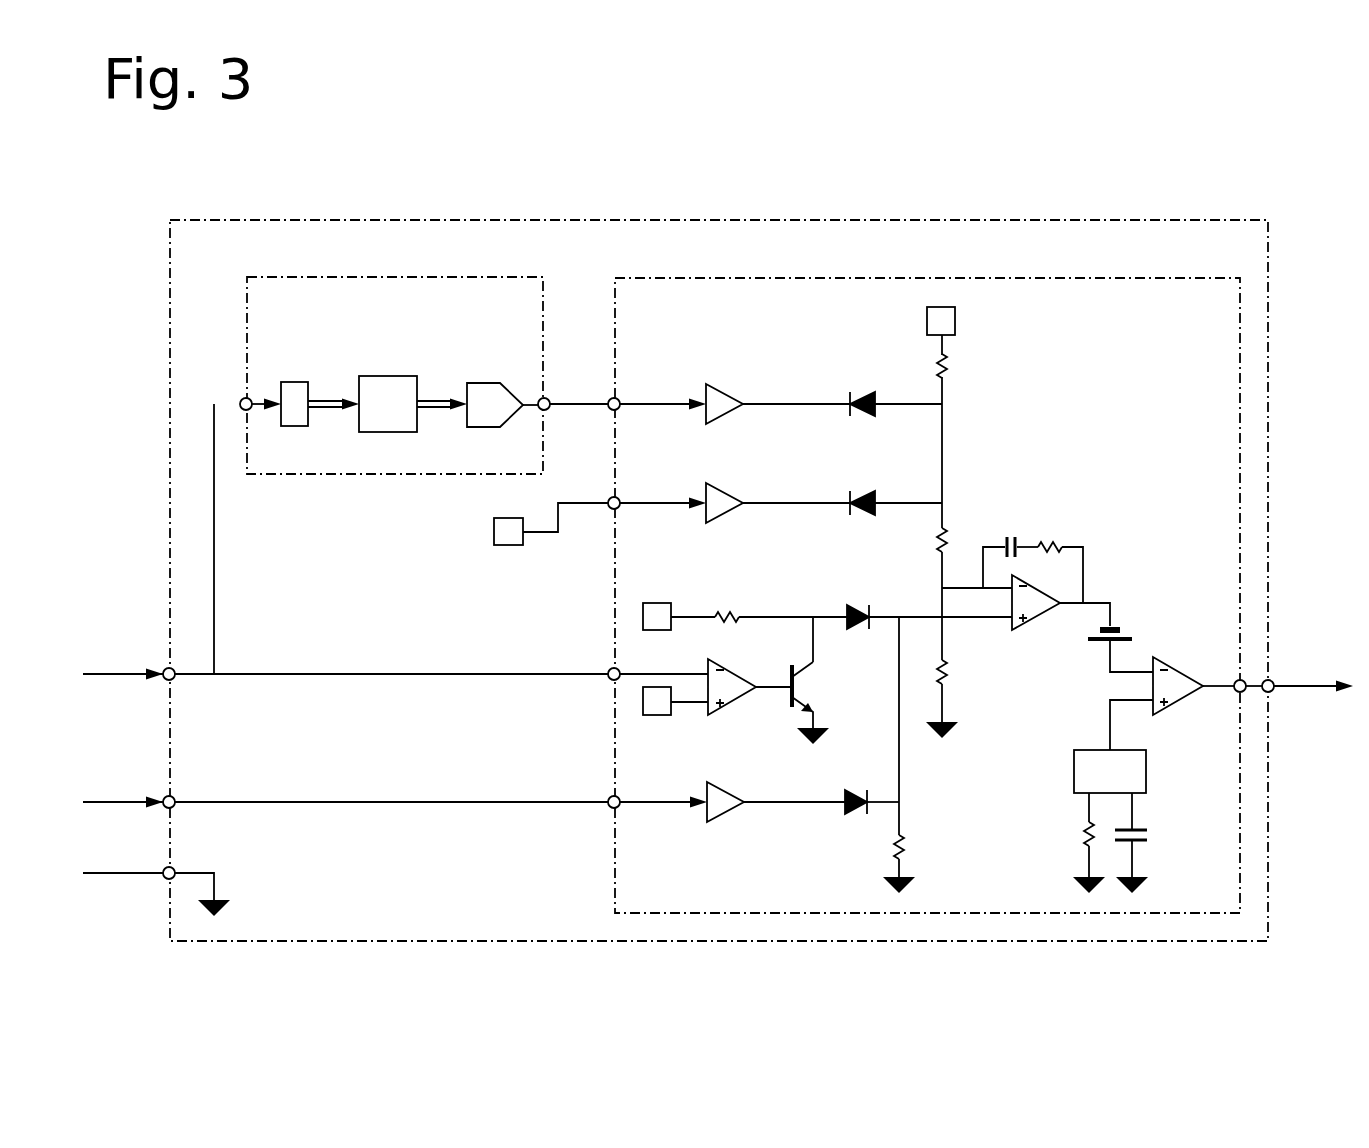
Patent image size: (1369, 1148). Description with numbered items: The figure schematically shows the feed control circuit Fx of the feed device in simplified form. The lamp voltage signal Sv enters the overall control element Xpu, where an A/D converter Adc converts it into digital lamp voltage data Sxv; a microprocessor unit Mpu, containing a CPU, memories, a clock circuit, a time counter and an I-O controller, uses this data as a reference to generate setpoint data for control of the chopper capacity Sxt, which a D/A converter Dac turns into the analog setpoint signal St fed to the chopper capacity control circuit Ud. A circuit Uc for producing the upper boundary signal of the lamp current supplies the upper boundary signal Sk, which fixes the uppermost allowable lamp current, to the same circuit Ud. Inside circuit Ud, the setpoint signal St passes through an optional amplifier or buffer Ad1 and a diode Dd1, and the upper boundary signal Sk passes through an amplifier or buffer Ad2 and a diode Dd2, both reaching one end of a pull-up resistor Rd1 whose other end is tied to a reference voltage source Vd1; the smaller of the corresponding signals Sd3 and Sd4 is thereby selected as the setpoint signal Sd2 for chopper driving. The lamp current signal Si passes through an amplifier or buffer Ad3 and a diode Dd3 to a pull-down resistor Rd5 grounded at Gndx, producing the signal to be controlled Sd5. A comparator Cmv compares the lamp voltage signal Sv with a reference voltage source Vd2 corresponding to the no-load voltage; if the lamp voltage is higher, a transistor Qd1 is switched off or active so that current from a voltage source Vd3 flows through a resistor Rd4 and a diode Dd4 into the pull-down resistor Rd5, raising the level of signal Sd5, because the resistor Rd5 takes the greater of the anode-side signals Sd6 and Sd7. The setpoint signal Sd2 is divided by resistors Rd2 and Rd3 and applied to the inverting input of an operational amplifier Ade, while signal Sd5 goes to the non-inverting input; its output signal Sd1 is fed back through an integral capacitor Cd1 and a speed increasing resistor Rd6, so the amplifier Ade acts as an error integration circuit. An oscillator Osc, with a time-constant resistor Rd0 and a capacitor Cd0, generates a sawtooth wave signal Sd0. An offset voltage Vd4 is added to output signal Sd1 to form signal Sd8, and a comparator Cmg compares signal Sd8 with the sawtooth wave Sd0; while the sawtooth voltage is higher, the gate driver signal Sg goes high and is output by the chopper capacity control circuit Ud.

The feed control circuit Fx is at (1268, 876).
The chopper capacity control circuit Ud is at (614, 884).
The overall control element Xpu is at (247, 363).
The A/D converter Adc is at (293, 380).
The microprocessor unit Mpu is at (389, 376).
The D/A converter Dac is at (502, 382).
The digital lamp voltage data Sxv is at (336, 396).
The setpoint data for control of the chopper capacity Sxt is at (446, 396).
The setpoint signal for control of the chopper capacity St is at (580, 402).
The lamp voltage signal Sv is at (112, 674).
The lamp current signal Si is at (117, 802).
The ground Gndx is at (115, 878).
The amplifier or buffer Ad1 is at (706, 391).
The amplifier or buffer Ad2 is at (706, 491).
The amplifier or buffer Ad3 is at (702, 818).
The signal corresponding to the setpoint signal Sd3 is at (767, 400).
The signal corresponding to the upper boundary signal Sd4 is at (767, 500).
The diode Dd1 is at (854, 395).
The diode Dd2 is at (854, 495).
The diode Dd3 is at (856, 798).
The diode Dd4 is at (856, 602).
The reference voltage source Vd1 is at (956, 322).
The reference voltage source Vd2 is at (660, 718).
The voltage source Vd3 is at (653, 603).
The offset voltage Vd4 is at (1133, 640).
The pull-up resistor Rd1 is at (947, 368).
The resistor Rd2 is at (936, 544).
The resistor Rd3 is at (950, 676).
The resistor Rd4 is at (724, 605).
The pull-down resistor Rd5 is at (905, 850).
The speed increasing resistor Rd6 is at (1050, 544).
The resistor for determining the time constant Rd0 is at (1084, 832).
The integral capacitor Cd1 is at (1008, 536).
The capacitor Cd0 is at (1148, 842).
The setpoint signal for chopper driving Sd2 is at (944, 432).
The signal to be controlled Sd5 is at (900, 782).
The anode-side signal of diode Sd6 is at (800, 805).
The anode-side signal of diode Sd7 is at (792, 612).
The signal compared to the sawtooth wave Sd8 is at (1108, 658).
The output signal of the operational amplifier Sd1 is at (1128, 583).
The sawtooth wave signal Sd0 is at (1108, 722).
The circuit for producing the upper boundary signal of the lamp current Uc is at (492, 532).
The upper boundary signal of the lamp current Sk is at (545, 534).
The comparator Cmv is at (746, 692).
The transistor Qd1 is at (808, 678).
The operational amplifier Ade is at (1012, 630).
The comparator Cmg is at (1175, 710).
The oscillator Osc is at (1147, 780).
The gate driver signal Sg is at (1316, 686).